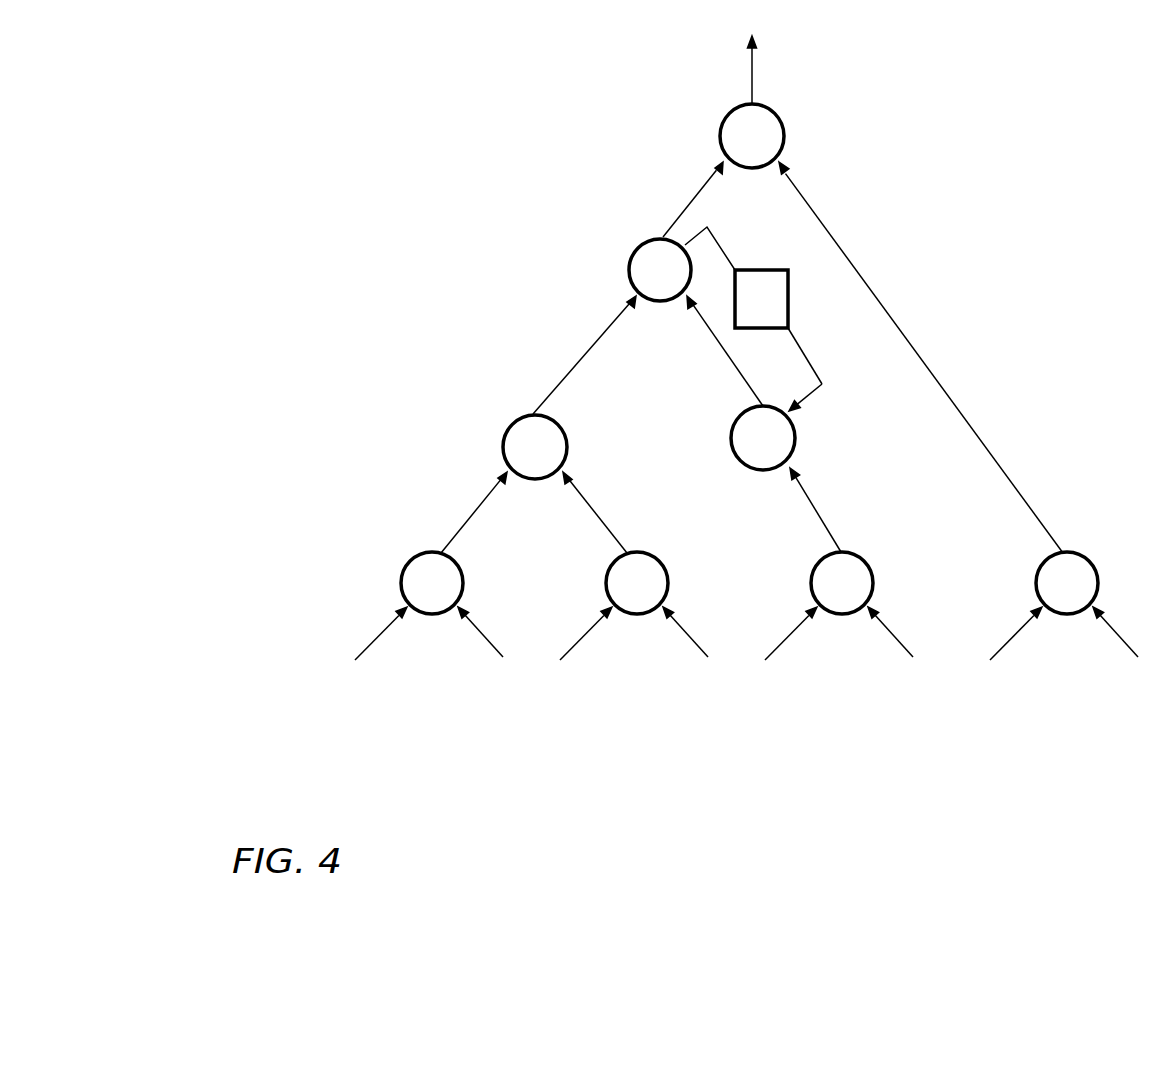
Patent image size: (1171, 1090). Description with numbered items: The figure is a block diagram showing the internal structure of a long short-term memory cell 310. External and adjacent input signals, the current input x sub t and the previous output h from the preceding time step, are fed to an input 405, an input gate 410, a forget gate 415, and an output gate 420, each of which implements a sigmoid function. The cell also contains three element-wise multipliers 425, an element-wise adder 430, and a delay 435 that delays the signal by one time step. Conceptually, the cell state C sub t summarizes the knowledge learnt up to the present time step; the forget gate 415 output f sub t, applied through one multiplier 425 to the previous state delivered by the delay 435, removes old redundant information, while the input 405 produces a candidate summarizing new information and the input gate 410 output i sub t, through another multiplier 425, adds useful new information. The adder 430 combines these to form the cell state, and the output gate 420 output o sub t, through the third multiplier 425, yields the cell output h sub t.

The long short-term memory cell 310 is at (370, 245).
The input 405 is at (430, 614).
The input gate 410 is at (635, 614).
The forget gate 415 is at (840, 614).
The output gate 420 is at (1062, 614).
The element-wise multiplier 425 is at (735, 112).
The adder 430 is at (646, 246).
The delay 435 is at (777, 269).